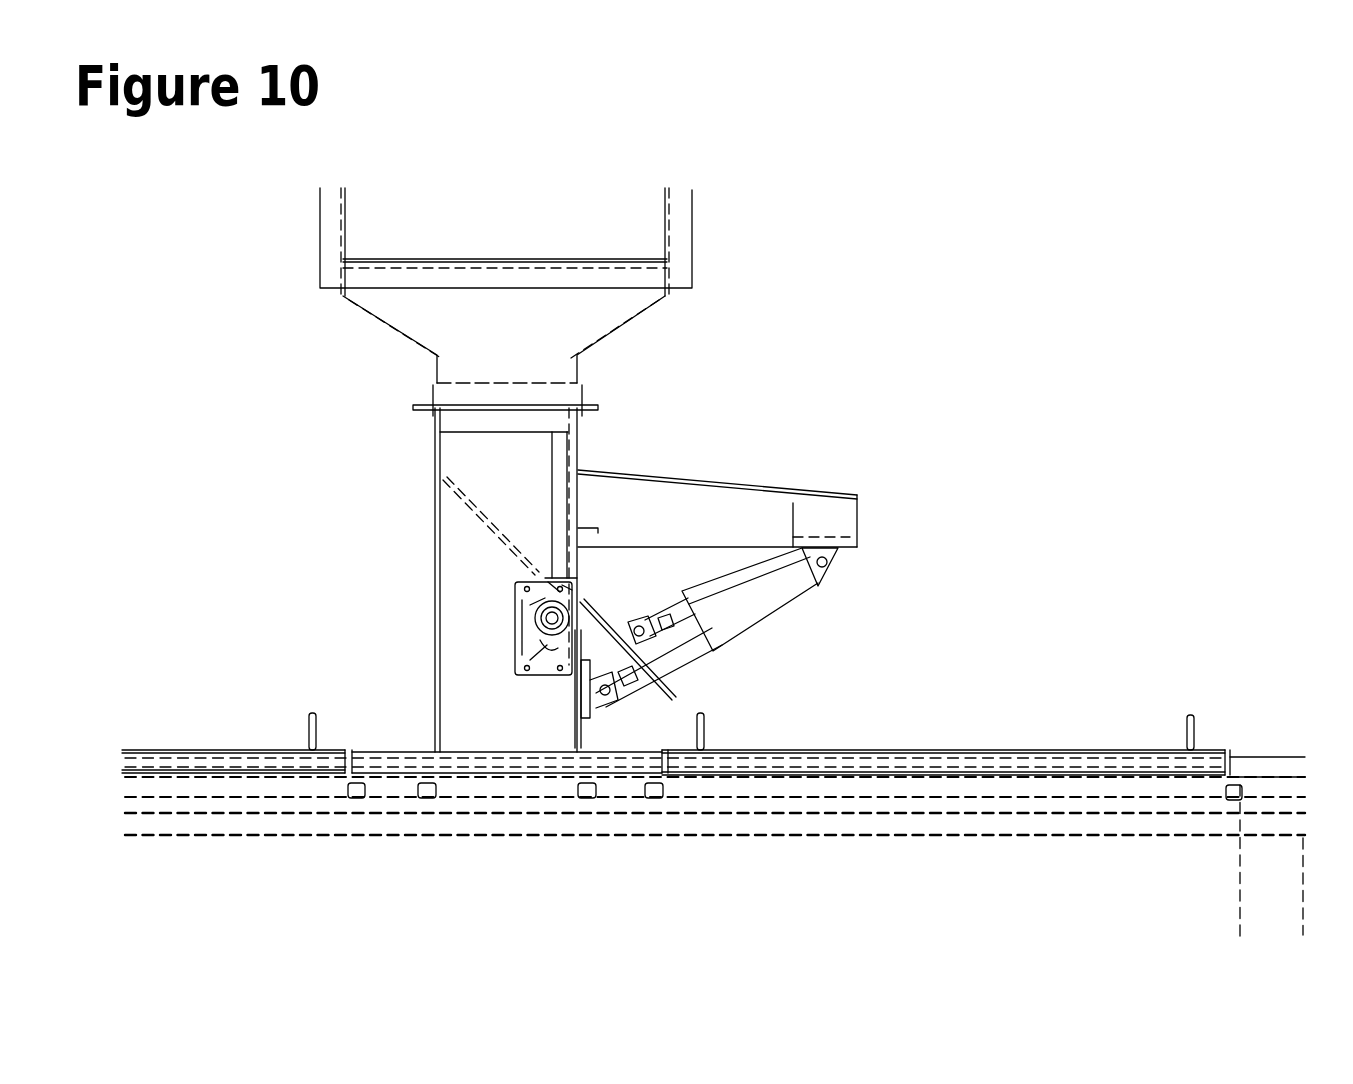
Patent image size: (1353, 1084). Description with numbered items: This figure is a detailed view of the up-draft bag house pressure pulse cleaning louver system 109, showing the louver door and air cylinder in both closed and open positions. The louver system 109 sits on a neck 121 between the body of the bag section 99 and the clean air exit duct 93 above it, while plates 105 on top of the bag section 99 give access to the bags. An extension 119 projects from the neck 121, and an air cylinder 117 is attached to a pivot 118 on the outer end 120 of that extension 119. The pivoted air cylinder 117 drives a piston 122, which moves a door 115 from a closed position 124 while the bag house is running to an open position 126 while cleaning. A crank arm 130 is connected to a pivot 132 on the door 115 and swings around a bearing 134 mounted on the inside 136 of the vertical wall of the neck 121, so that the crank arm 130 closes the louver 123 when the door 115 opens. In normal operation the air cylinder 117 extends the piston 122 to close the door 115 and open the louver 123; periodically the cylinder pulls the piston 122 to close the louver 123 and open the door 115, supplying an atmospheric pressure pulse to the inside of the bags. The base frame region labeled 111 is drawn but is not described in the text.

The clean air exit duct 93 is at (692, 200).
The pulse louver system 109 is at (856, 385).
The extension 119 is at (628, 468).
The outer end 120 is at (857, 513).
The pivot 118 is at (842, 564).
The air cylinder 117 is at (786, 608).
The piston 122 is at (693, 642).
The open position 126 is at (598, 618).
The pivot 132 is at (600, 637).
The inside of the vertical wall 136 is at (560, 560).
The bearing 134 is at (540, 620).
The crank arm 130 is at (567, 667).
The louver 123 is at (460, 500).
The neck 121 is at (437, 608).
The bag section 99 is at (383, 752).
The door 115 is at (580, 722).
The closed position 124 is at (580, 735).
The plates 105 is at (948, 752).
The floor frame 111 is at (1068, 885).